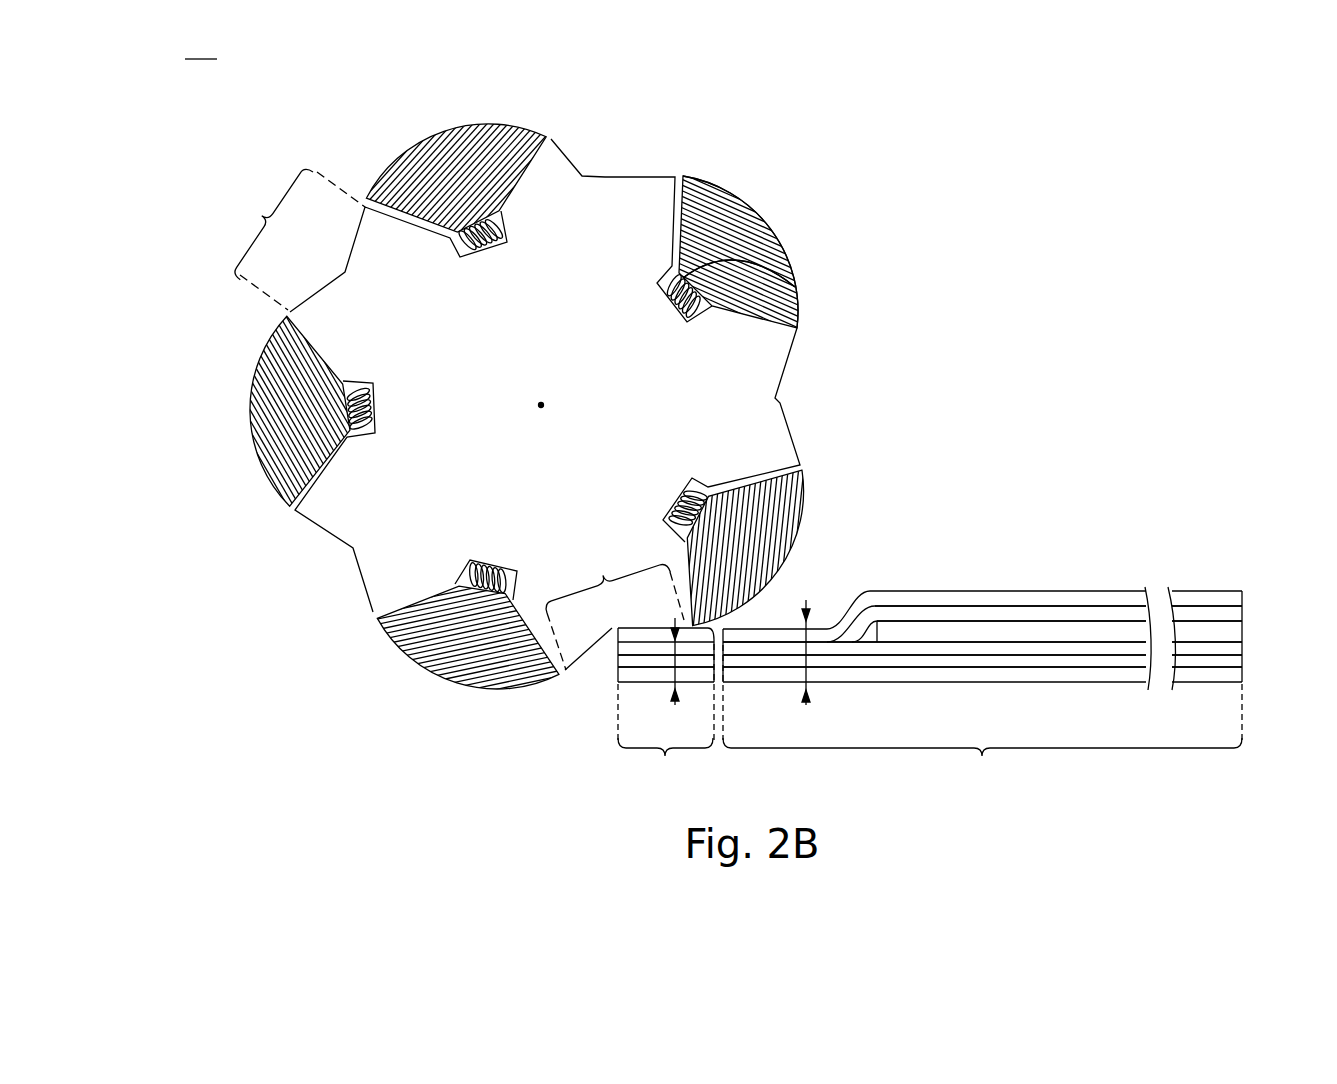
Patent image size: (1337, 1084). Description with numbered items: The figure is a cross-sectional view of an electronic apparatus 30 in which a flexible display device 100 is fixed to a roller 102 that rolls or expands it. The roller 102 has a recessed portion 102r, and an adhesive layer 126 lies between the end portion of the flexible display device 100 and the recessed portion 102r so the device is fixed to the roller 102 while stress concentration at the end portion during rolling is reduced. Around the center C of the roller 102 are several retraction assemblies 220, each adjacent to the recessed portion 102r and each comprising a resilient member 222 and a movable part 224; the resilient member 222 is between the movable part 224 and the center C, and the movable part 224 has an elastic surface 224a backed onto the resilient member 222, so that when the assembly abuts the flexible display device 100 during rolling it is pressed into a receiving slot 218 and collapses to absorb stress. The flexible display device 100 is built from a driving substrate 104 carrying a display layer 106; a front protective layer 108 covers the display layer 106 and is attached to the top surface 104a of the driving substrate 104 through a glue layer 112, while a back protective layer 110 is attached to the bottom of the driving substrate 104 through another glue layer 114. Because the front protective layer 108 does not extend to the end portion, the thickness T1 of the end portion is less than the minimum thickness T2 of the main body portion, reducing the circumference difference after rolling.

The electronic apparatus 30 is at (201, 45).
The roller 102 is at (582, 171).
The recessed portion 102r is at (441, 416).
The center C is at (553, 400).
The retraction assembly 220 is at (799, 260).
The movable part 224 is at (768, 244).
The resilient member 222 is at (773, 280).
The elastic surface 224a is at (797, 307).
The receiving slot 218 is at (747, 338).
The flexible display device 100 is at (1200, 577).
The adhesive layer 126 is at (643, 636).
The front protective layer 108 is at (1236, 598).
The glue layer 112 is at (1236, 613).
The display layer 106 is at (1236, 633).
The driving substrate 104 is at (1236, 650).
The top surface 104a is at (778, 645).
The glue layer 114 is at (1236, 662).
The back protective layer 110 is at (1236, 677).
The thickness of the end portion T1 is at (673, 668).
The minimum thickness of the main body portion T2 is at (807, 662).